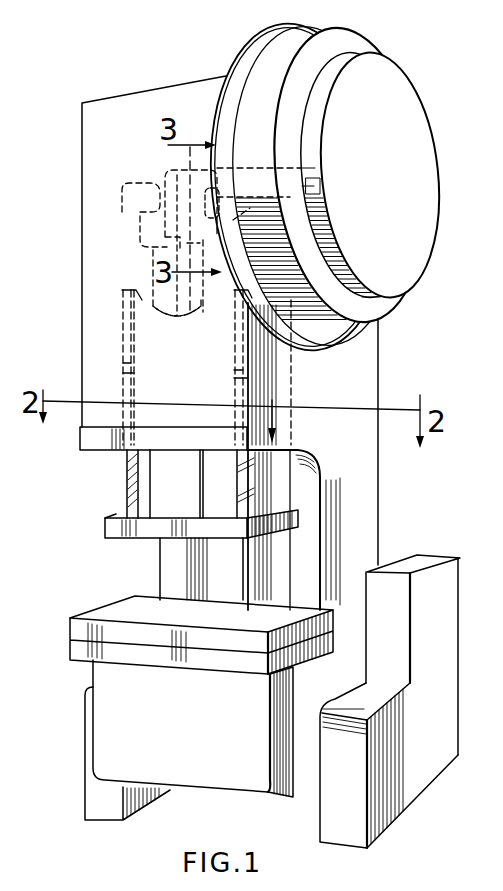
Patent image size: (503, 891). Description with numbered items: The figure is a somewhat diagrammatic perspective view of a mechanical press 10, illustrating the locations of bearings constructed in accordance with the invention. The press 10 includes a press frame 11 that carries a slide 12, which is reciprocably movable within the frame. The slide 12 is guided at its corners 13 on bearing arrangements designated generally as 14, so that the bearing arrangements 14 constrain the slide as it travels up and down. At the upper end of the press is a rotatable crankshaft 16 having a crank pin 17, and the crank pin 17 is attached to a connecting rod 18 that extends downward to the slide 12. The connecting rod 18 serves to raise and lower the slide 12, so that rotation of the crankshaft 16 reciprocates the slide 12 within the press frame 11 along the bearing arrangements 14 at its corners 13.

The press 10 is at (380, 519).
The press frame 11 is at (366, 550).
The slide 12 is at (142, 478).
The corners 13 is at (253, 488).
The bearing arrangements 14 is at (116, 333).
The crankshaft 16 is at (118, 195).
The crank pin 17 is at (150, 181).
The connecting rod 18 is at (173, 257).